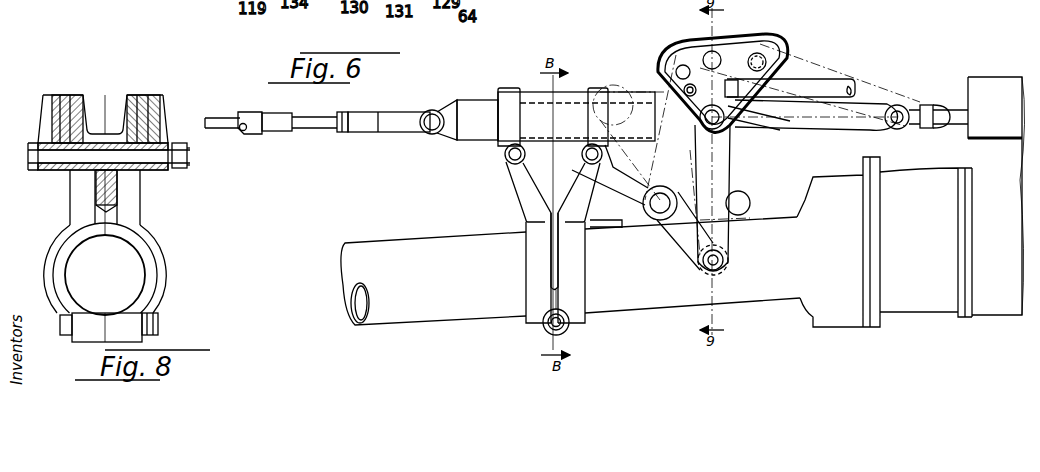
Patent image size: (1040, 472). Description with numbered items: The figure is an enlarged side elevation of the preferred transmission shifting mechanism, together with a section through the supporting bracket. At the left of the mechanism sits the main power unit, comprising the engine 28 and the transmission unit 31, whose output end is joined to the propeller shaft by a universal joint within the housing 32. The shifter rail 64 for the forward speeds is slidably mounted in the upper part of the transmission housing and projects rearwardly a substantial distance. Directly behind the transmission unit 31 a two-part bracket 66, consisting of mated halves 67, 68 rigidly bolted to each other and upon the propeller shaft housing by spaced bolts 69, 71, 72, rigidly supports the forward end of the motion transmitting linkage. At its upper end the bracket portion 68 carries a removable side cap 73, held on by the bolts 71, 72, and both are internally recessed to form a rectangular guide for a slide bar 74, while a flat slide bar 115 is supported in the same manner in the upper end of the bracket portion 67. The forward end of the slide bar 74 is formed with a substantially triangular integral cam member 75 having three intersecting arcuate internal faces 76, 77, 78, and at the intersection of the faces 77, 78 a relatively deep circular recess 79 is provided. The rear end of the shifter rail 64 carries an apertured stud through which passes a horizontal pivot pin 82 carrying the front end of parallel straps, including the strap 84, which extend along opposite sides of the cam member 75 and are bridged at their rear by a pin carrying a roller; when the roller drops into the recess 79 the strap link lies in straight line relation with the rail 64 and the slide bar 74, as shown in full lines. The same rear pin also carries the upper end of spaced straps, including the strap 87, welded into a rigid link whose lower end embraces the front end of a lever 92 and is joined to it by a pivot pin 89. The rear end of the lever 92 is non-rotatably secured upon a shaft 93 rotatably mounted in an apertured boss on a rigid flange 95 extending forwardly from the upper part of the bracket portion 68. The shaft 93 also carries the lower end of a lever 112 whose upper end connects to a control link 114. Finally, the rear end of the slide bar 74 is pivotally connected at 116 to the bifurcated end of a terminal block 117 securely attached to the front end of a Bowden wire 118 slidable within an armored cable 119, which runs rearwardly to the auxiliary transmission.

In FIG. 6, the engine 28 is at (666, 300).
In FIG. 6, the transmission unit 31 is at (1000, 86).
In FIG. 6, the universal joint housing 32 is at (830, 192).
In FIG. 6, the shifter rail 64 is at (958, 110).
In FIG. 8, the two-part bracket 66 is at (143, 212).
In FIG. 6, the two-part bracket 66 is at (542, 242).
In FIG. 8, the bracket half 67 is at (85, 191).
In FIG. 8, the bracket half 68 is at (125, 196).
In FIG. 6, the bracket half 68 is at (535, 210).
In FIG. 8, the bolt 69 is at (158, 323).
In FIG. 6, the bolt 69 is at (544, 326).
In FIG. 6, the bolt 71 is at (510, 162).
In FIG. 8, the bolt 72 is at (188, 157).
In FIG. 6, the bolt 72 is at (583, 160).
In FIG. 8, the removable side cap 73 is at (165, 125).
In FIG. 8, the slide bar 74 is at (146, 104).
In FIG. 6, the slide bar 74 is at (480, 110).
In FIG. 6, the triangular cam member 75 is at (748, 46).
In FIG. 6, the arcuate internal face 76 is at (700, 50).
In FIG. 6, the arcuate internal face 77 is at (780, 92).
In FIG. 6, the arcuate internal face 78 is at (662, 86).
In FIG. 6, the circular recess 79 is at (726, 122).
In FIG. 6, the horizontal pivot pin 82 is at (898, 129).
In FIG. 6, the strap 84 is at (815, 126).
In FIG. 6, the strap 87 is at (735, 170).
In FIG. 6, the pivot pin 89 is at (722, 268).
In FIG. 6, the lever 92 is at (680, 240).
In FIG. 6, the shaft 93 is at (655, 203).
In FIG. 6, the rigid flange 95 is at (618, 222).
In FIG. 6, the lever 112 is at (612, 100).
In FIG. 6, the control link 114 is at (825, 80).
In FIG. 8, the flat slide bar 115 is at (66, 104).
In FIG. 6, the pivotal connection 116 is at (432, 116).
In FIG. 6, the terminal block 117 is at (396, 126).
In FIG. 6, the Bowden wire 118 is at (236, 128).
In FIG. 6, the armored cable 119 is at (245, 115).